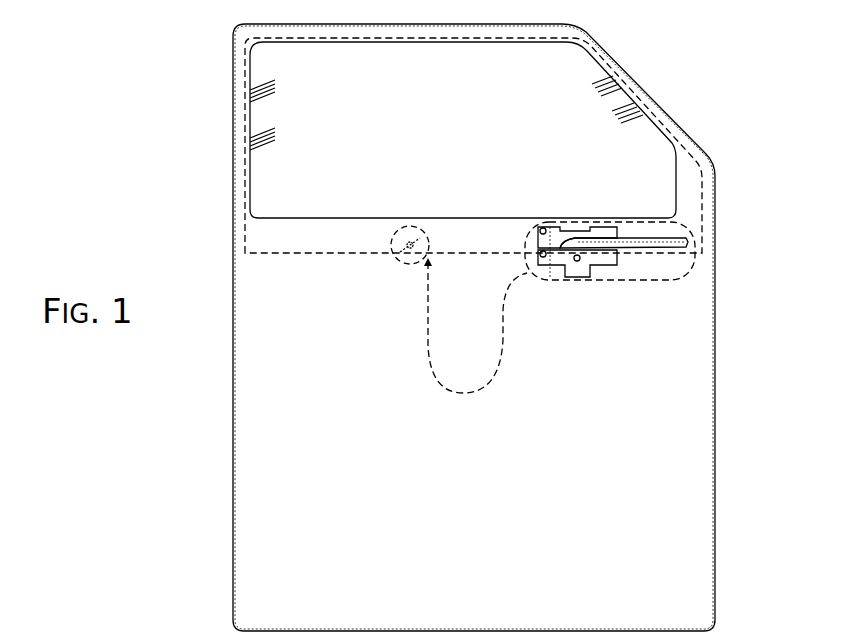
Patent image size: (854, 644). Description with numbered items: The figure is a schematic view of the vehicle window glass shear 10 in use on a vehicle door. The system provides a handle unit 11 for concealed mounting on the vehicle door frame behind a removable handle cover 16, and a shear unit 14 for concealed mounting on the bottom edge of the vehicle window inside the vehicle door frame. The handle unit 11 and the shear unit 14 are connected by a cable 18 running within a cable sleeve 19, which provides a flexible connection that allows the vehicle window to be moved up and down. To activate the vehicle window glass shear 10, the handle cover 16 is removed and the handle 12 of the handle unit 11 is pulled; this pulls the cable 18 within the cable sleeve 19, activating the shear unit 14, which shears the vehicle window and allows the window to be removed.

The vehicle window glass shear 10 is at (352, 182).
The handle unit 11 is at (577, 203).
The handle 12 is at (646, 238).
The shear unit 14 is at (381, 272).
The handle cover 16 is at (682, 276).
The cable 18 is at (555, 278).
The cable sleeve 19 is at (497, 373).